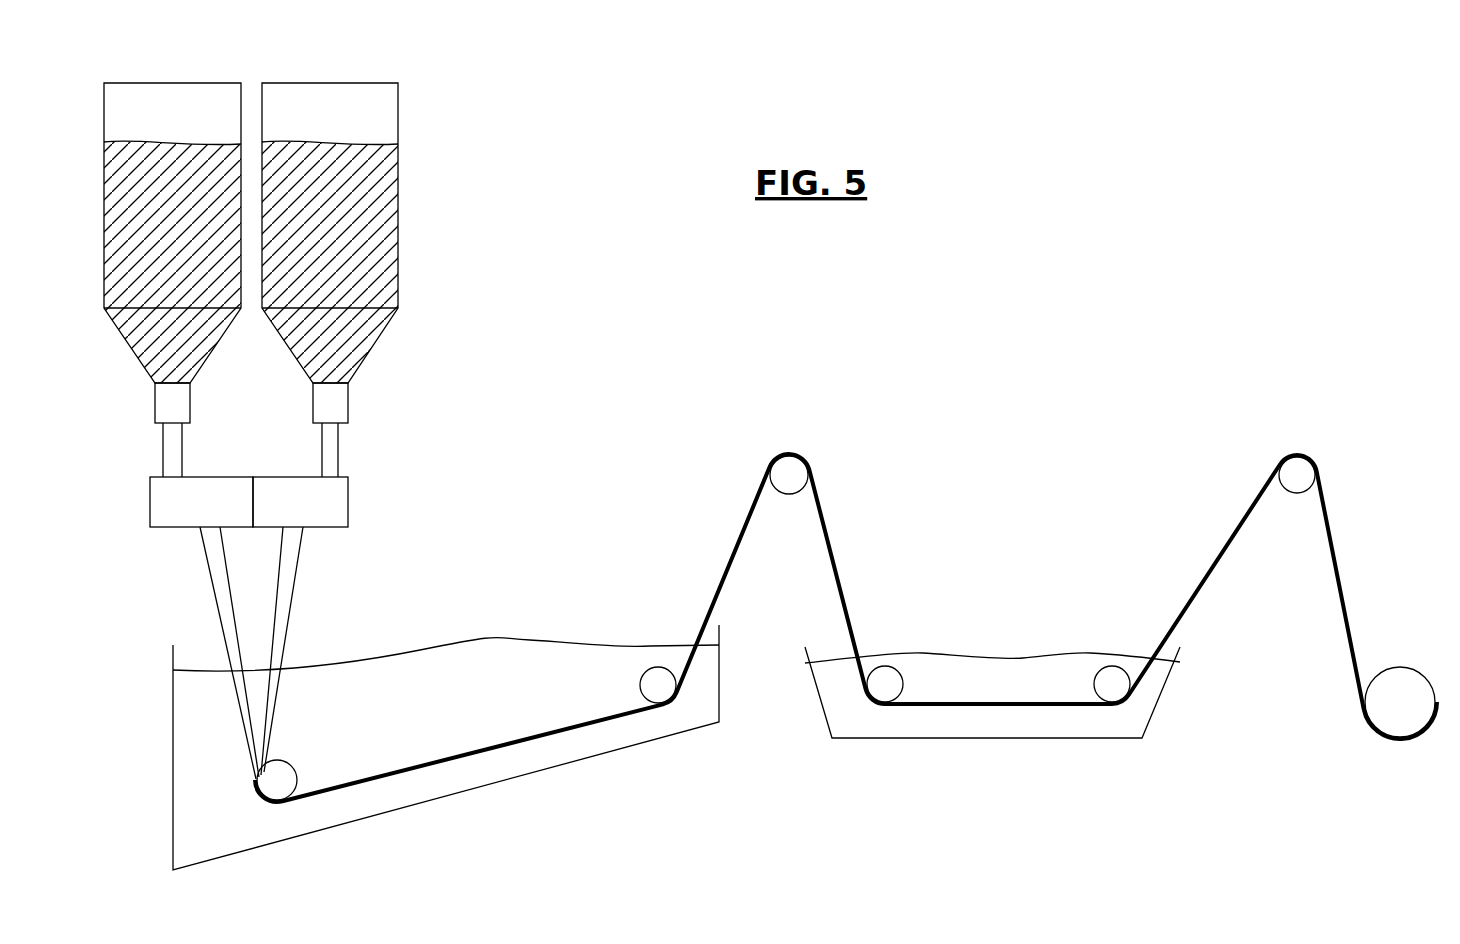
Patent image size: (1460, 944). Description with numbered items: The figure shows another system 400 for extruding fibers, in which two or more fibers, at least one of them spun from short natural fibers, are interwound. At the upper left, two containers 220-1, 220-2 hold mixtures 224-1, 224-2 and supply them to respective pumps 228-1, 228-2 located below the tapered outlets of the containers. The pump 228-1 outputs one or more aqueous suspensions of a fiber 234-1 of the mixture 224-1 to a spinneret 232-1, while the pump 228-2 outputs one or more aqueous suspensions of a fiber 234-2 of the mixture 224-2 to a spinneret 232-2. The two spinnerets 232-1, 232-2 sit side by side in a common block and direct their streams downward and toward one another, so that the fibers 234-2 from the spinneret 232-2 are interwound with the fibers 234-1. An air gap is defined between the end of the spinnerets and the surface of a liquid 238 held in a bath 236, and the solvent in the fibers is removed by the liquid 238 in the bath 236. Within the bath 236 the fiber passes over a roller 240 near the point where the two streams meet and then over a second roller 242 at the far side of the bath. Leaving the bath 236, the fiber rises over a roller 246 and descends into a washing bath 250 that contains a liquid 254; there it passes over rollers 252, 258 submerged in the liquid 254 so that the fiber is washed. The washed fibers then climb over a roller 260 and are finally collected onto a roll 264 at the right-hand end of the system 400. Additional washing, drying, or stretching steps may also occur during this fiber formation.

The system for extruding fibers 400 is at (900, 332).
The container 220-1 is at (178, 83).
The container 220-2 is at (335, 83).
The mixture 224-1 is at (208, 142).
The mixture 224-2 is at (373, 142).
The pump 228-1 is at (190, 405).
The pump 228-2 is at (348, 415).
The spinneret 232-1 is at (172, 528).
The spinneret 232-2 is at (348, 512).
The fiber 234-1 is at (211, 577).
The fiber 234-2 is at (295, 580).
The bath 236 is at (173, 713).
The liquid 238 is at (488, 647).
The roller 240 is at (292, 766).
The roller 242 is at (656, 666).
The roller 246 is at (787, 455).
The washing bath 250 is at (988, 739).
The roller 252 is at (887, 665).
The liquid 254 is at (1018, 657).
The roller 258 is at (1107, 665).
The roller 260 is at (1297, 456).
The roll 264 is at (1398, 666).